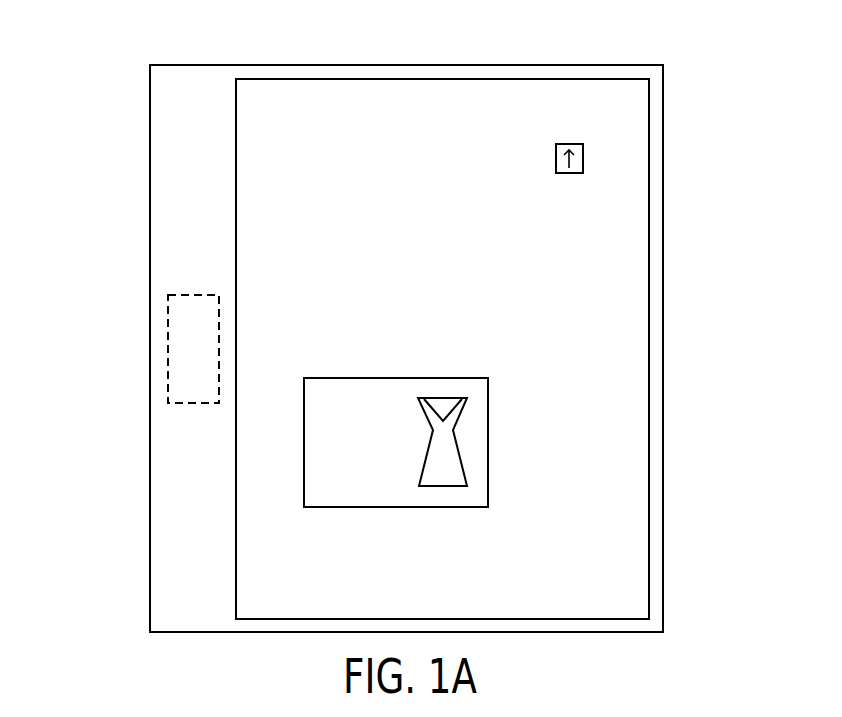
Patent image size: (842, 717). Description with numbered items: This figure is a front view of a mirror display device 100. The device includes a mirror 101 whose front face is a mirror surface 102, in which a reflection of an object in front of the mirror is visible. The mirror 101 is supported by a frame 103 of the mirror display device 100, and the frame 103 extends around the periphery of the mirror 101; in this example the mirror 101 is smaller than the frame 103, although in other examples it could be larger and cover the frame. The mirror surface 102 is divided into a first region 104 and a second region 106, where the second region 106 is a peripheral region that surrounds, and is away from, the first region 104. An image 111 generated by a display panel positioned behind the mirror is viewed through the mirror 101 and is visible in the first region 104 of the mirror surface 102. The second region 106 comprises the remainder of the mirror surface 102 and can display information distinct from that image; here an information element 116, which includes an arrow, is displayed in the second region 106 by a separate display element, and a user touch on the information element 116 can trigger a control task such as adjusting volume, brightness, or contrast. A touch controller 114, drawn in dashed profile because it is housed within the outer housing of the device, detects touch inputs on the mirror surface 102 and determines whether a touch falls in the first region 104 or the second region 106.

The mirror display device 100 is at (179, 51).
The mirror 101 is at (235, 105).
The mirror surface 102 is at (268, 97).
The frame 103 is at (578, 73).
The first region 104 is at (395, 378).
The second region 106 is at (583, 273).
The image 111 is at (460, 458).
The touch controller 114 is at (168, 348).
The information element 116 is at (583, 158).